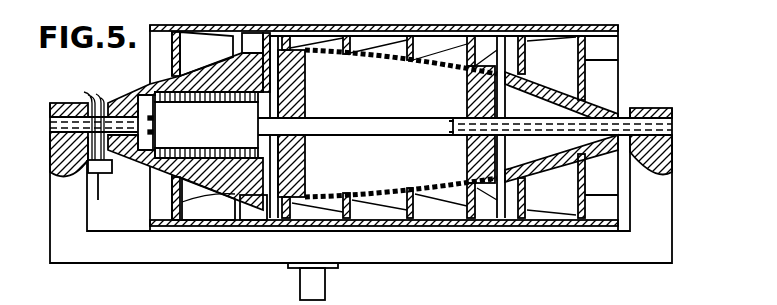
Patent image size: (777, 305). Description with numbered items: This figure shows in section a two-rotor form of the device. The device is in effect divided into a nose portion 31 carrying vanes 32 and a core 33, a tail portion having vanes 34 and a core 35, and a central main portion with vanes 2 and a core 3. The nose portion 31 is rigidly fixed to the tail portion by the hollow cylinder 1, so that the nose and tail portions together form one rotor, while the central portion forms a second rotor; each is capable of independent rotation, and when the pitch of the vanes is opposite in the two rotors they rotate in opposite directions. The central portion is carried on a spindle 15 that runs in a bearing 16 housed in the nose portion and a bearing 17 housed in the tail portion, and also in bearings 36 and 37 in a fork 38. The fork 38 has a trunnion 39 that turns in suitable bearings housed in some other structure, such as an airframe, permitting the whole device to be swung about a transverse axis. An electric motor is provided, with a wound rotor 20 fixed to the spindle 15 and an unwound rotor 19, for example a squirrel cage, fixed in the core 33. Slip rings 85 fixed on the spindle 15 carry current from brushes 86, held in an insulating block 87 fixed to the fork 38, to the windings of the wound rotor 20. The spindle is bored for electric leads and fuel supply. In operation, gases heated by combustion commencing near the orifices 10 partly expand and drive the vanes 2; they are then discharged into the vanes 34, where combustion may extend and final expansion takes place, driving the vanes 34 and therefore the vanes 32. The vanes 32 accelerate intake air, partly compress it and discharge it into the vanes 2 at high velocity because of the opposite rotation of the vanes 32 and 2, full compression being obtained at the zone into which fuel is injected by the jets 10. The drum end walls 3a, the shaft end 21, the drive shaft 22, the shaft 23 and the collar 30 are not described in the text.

The hollow cylinder 1 is at (404, 27).
The vanes 2 is at (303, 34).
The core 3 is at (388, 58).
The drum end wall 3a is at (525, 52).
The orifices 10 is at (306, 54).
The spindle 15 is at (368, 118).
The bearing 16 is at (125, 100).
The bearing 17 is at (617, 118).
The unwound rotor 19 is at (247, 90).
The wound rotor 20 is at (206, 125).
The shaft end 21 is at (672, 125).
The drive shaft 22 is at (50, 125).
The shaft 23 is at (457, 139).
The collar 30 is at (153, 122).
The nose portion 31 is at (132, 170).
The vanes 32 is at (230, 27).
The core 33 is at (206, 65).
The vanes 34 is at (611, 69).
The core 35 is at (560, 93).
The bearing 36 is at (72, 170).
The bearing 37 is at (652, 170).
The fork 38 is at (447, 258).
The trunnion 39 is at (328, 287).
The slip rings 85 is at (84, 92).
The brushes 86 is at (142, 150).
The insulating block 87 is at (95, 194).